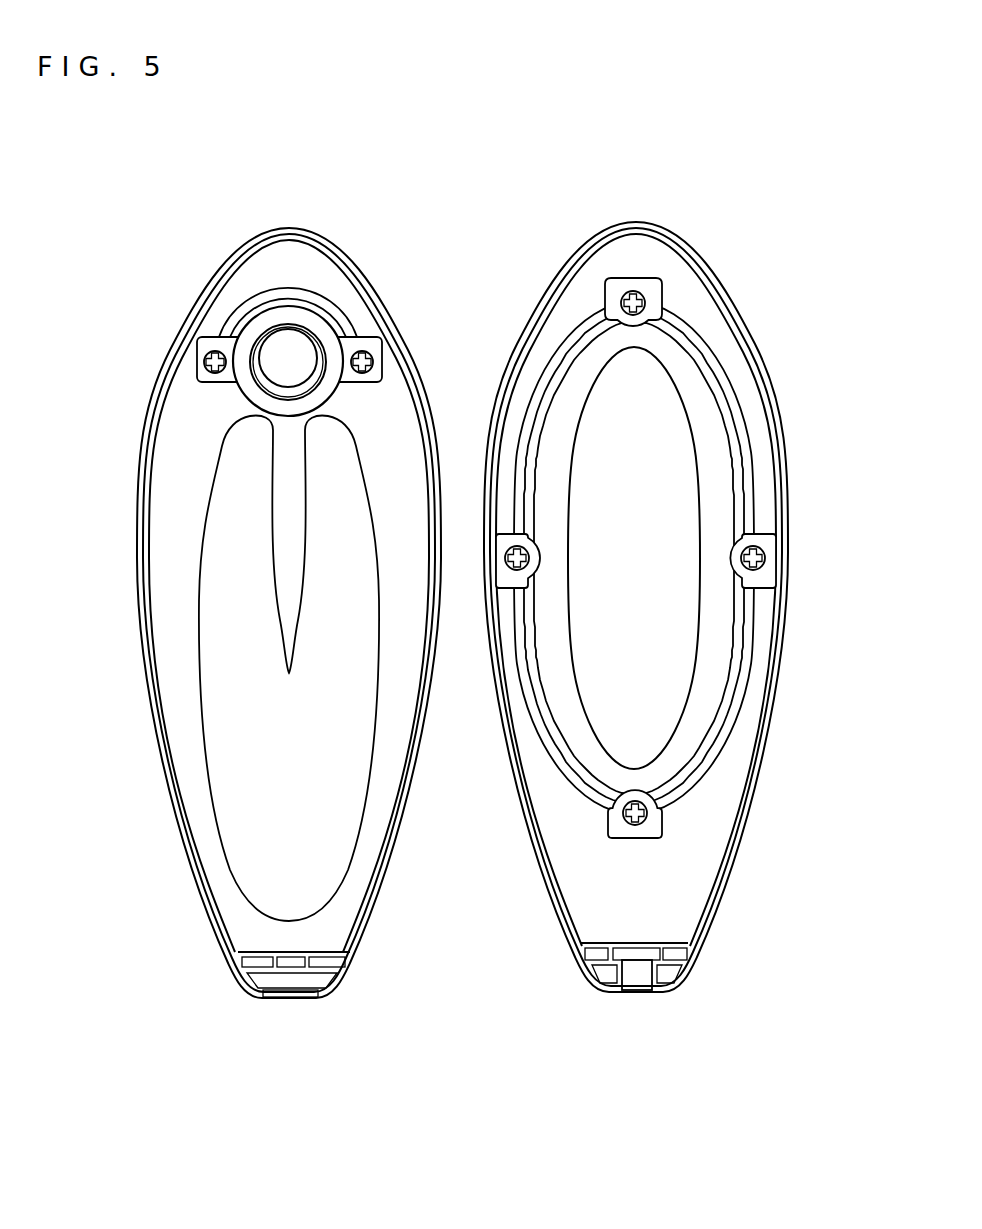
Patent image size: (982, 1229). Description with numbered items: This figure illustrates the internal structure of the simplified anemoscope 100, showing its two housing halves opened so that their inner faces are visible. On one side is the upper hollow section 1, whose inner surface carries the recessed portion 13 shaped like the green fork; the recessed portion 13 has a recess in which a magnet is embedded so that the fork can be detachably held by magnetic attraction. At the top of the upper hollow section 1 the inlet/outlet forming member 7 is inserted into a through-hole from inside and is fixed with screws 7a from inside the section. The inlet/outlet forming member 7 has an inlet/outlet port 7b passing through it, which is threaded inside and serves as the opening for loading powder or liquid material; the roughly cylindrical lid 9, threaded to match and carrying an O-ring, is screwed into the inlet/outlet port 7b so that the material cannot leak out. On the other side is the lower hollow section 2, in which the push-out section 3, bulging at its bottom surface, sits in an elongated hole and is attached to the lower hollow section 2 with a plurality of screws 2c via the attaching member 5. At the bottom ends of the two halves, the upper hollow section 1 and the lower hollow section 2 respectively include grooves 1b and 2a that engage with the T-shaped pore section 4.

The upper hollow section 1 is at (150, 412).
The groove 1b is at (340, 963).
The lower hollow section 2 is at (765, 386).
The groove 2a is at (675, 955).
The screws 2c is at (640, 292).
The push-out section 3 is at (668, 511).
The pore section 4 is at (640, 978).
The attaching member 5 is at (680, 356).
The inlet/outlet forming member 7 is at (320, 332).
The screws 7a is at (215, 356).
The inlet/outlet port 7b is at (278, 356).
The lid 9 is at (297, 345).
The recessed portion 13 is at (240, 628).
The simplified anemoscope 100 is at (492, 1042).